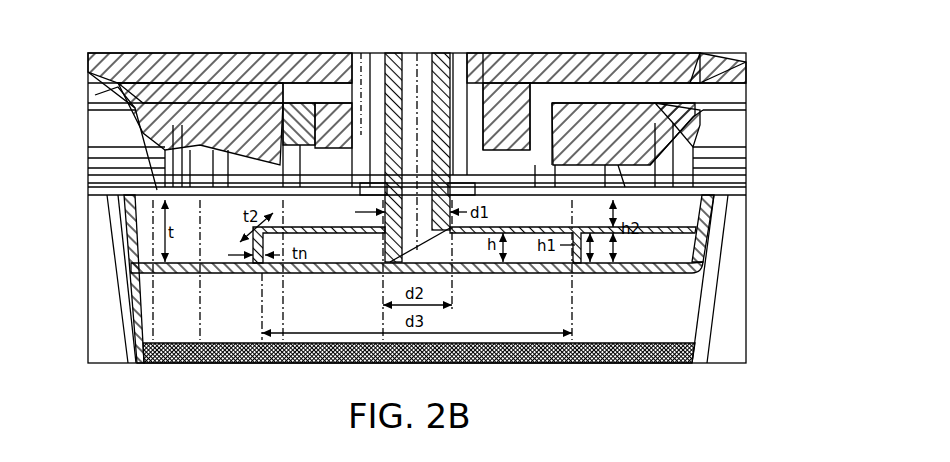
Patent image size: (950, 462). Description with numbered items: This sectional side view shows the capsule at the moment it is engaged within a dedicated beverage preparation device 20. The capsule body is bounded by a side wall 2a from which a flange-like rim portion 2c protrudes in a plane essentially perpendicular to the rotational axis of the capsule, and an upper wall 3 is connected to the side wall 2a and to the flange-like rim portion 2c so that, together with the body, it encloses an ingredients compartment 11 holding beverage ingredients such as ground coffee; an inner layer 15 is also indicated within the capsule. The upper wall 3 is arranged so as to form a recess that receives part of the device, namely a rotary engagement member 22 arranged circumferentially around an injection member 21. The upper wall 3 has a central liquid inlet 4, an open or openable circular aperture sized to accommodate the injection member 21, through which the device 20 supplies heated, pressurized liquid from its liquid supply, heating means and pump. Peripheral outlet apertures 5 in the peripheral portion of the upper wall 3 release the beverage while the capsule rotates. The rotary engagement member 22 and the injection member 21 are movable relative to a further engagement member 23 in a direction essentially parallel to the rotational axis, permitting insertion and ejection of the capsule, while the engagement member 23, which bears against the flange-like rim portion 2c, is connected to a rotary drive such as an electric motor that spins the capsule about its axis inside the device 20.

The beverage preparation device 20 is at (757, 87).
The injection member 21 is at (429, 75).
The rotary engagement member 22 is at (600, 97).
The flange-like rim portion 2c is at (732, 194).
The engagement member 23 is at (724, 250).
The side wall 2a is at (132, 298).
The peripheral outlet apertures 5 is at (133, 268).
The upper wall 3 is at (666, 274).
The inner layer 15 is at (252, 230).
The central liquid inlet 4 is at (447, 268).
The ingredients compartment 11 is at (668, 364).